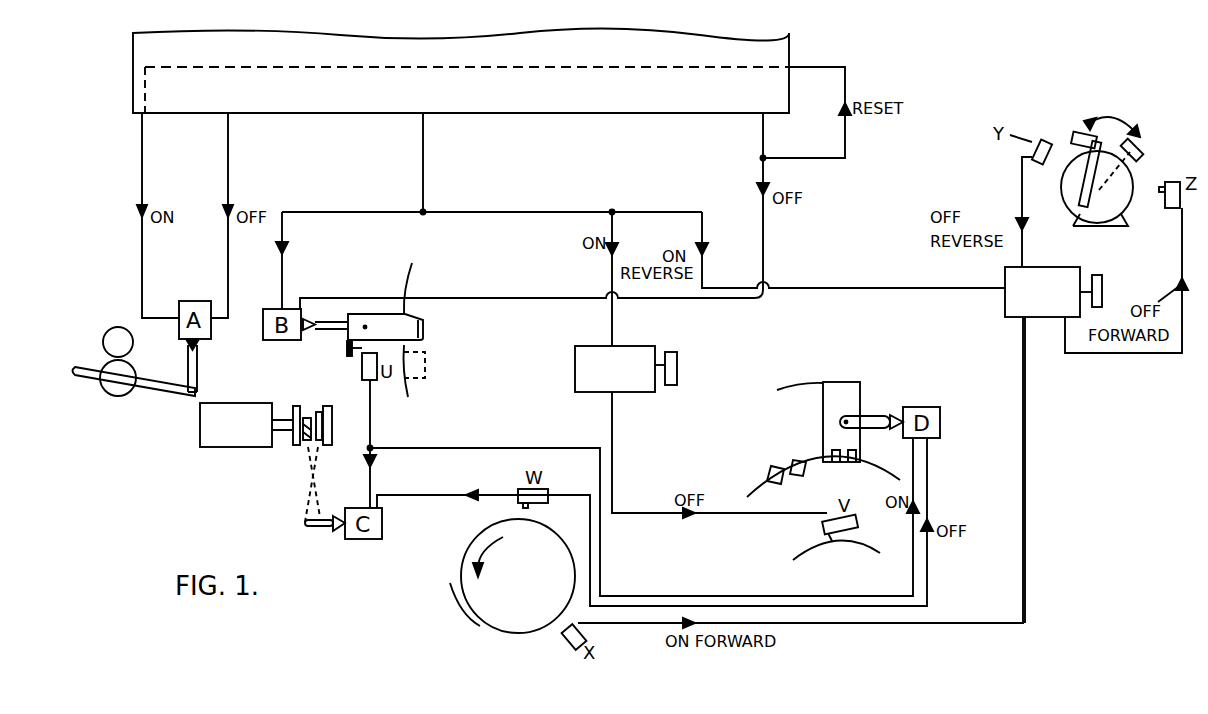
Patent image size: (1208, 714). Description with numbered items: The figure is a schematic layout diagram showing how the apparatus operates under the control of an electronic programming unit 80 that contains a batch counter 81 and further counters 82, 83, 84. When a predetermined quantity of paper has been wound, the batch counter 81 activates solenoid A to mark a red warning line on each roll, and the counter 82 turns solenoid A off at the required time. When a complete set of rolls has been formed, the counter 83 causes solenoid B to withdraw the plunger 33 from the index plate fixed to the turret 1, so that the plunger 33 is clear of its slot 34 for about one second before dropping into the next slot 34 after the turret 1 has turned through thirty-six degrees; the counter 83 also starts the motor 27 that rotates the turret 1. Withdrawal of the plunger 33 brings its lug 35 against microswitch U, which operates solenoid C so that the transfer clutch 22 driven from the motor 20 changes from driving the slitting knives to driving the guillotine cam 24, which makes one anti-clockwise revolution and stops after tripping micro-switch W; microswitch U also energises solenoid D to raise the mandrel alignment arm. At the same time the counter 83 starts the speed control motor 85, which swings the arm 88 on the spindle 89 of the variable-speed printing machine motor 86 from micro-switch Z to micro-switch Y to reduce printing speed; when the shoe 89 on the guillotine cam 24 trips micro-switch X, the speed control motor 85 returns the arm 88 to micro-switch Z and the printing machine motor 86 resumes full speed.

The turret 1 is at (772, 488).
The motor 20 is at (233, 420).
The transfer clutch 22 is at (311, 412).
The guillotine cam 24 is at (490, 533).
The motor 27 is at (638, 356).
The plunger 33 is at (373, 318).
The slots 34 is at (427, 365).
The lug 35 is at (347, 347).
The electronic programming unit 80 is at (757, 72).
The batch counter 81 is at (158, 202).
The counter 82 is at (227, 202).
The counter 83 is at (492, 151).
The control output 84 is at (575, 188).
The speed control motor 85 is at (1015, 302).
The printing machine motor 86 is at (1125, 198).
The arm 88 is at (1088, 145).
The spindle 89 is at (447, 592).